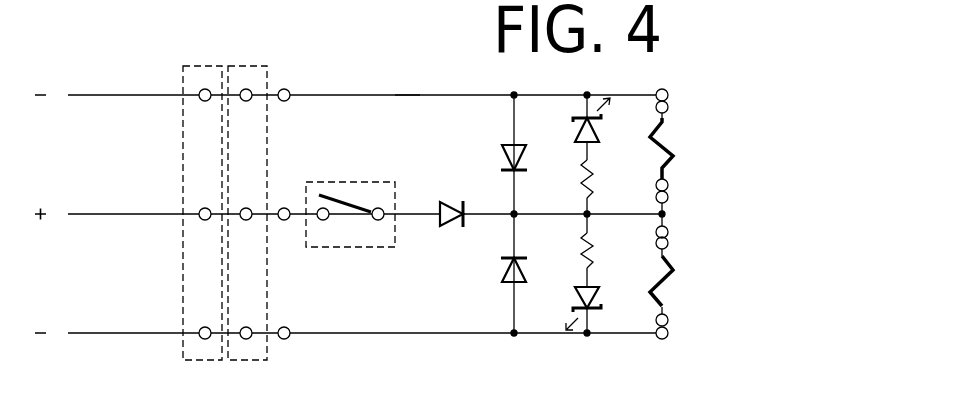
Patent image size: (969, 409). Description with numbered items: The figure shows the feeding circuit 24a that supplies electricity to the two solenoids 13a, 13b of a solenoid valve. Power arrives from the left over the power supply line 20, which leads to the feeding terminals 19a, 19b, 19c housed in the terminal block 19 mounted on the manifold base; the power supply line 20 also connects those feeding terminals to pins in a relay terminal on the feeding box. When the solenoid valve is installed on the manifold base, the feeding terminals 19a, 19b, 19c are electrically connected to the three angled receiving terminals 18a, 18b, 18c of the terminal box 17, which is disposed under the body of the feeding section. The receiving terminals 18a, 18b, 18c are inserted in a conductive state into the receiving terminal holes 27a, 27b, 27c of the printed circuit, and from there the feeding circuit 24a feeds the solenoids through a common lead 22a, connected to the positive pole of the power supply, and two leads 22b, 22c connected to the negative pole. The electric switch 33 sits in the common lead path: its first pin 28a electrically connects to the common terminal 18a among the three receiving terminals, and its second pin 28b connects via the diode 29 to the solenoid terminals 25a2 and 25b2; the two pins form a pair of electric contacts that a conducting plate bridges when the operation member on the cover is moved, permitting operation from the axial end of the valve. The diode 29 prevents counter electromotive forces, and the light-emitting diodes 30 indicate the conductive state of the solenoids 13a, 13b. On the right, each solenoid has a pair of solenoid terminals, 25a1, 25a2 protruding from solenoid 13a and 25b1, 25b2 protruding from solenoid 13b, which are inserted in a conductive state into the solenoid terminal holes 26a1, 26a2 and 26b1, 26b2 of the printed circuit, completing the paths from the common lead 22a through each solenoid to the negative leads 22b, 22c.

The power supply line 20 is at (82, 94).
The terminal block 19 is at (200, 64).
The terminal box 17 is at (247, 64).
The feeding terminal 19a is at (200, 210).
The feeding terminal 19b is at (200, 91).
The feeding terminal 19c is at (202, 328).
The receiving terminal 18a is at (250, 208).
The receiving terminal 18b is at (250, 90).
The receiving terminal 18c is at (250, 338).
The receiving terminal hole 27a is at (282, 220).
The receiving terminal hole 27b is at (290, 89).
The receiving terminal hole 27c is at (288, 339).
The common lead 22a is at (420, 216).
The lead 22b is at (421, 97).
The lead 22c is at (458, 335).
The feeding circuit 24a is at (411, 85).
The electric switch 33 is at (342, 182).
The first pin 28a is at (323, 220).
The second pin 28b is at (378, 220).
The diode 29 is at (506, 142).
The light-emitting diode 30 is at (598, 298).
The solenoid 13a is at (670, 148).
The solenoid 13b is at (672, 282).
The solenoid terminal 25a1 is at (668, 110).
The solenoid terminal 25a2 is at (668, 186).
The solenoid terminal 25b1 is at (668, 318).
The solenoid terminal 25b2 is at (657, 245).
The solenoid terminal hole 26a1 is at (668, 92).
The solenoid terminal hole 26a2 is at (668, 200).
The solenoid terminal hole 26b1 is at (668, 338).
The solenoid terminal hole 26b2 is at (668, 234).